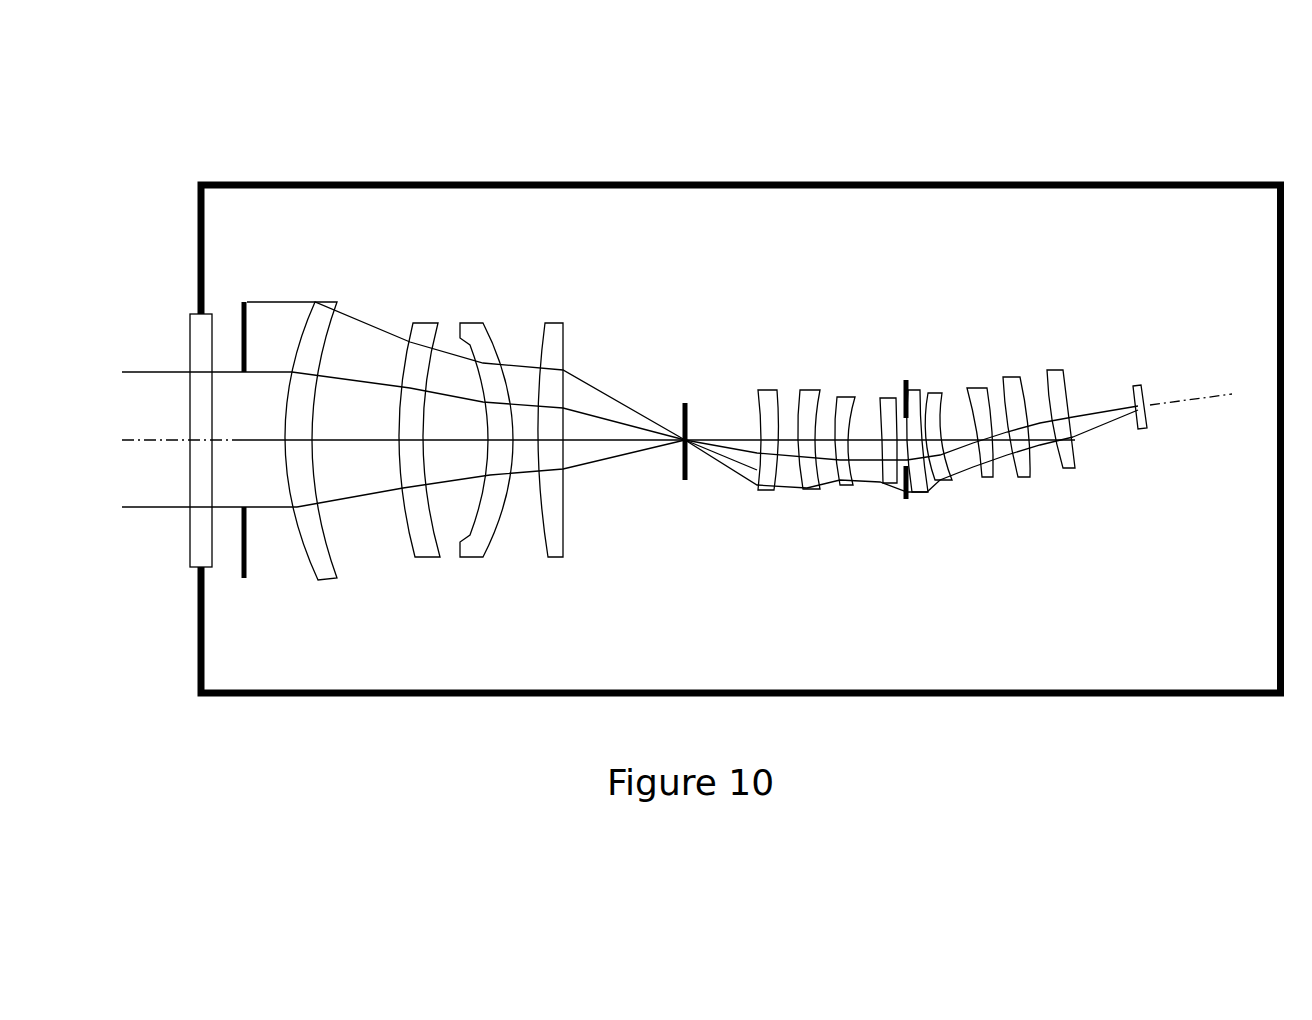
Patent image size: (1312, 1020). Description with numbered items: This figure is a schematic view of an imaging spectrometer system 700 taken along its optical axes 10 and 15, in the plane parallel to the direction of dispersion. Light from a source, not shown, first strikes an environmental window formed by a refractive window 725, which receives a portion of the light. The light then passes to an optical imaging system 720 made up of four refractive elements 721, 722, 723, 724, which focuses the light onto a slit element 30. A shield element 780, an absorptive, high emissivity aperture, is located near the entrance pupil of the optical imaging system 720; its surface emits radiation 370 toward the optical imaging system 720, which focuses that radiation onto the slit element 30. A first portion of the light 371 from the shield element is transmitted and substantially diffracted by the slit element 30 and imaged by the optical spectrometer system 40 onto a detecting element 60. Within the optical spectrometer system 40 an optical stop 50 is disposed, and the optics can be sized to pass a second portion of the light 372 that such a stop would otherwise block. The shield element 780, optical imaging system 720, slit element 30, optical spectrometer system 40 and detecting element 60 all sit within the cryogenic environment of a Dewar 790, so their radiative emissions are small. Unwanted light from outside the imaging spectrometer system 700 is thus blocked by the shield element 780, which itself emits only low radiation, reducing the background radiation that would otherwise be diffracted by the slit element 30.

The imaging spectrometer system 700 is at (193, 130).
The Dewar 790 is at (718, 180).
The refractive window 725 is at (188, 342).
The optical axis 10 is at (162, 442).
The shield element 780 is at (249, 557).
The radiation 370 is at (263, 352).
The optical imaging system 720 is at (562, 290).
The refractive element 721 is at (328, 582).
The refractive element 722 is at (425, 560).
The refractive element 723 is at (472, 560).
The refractive element 724 is at (553, 560).
The slit element 30 is at (679, 420).
The second portion of the light 372 is at (731, 458).
The optical spectrometer system 40 is at (1077, 357).
The optical stop 50 is at (905, 498).
The first portion of the light 371 is at (1085, 422).
The detecting element 60 is at (1143, 398).
The optical axis 15 is at (1193, 402).